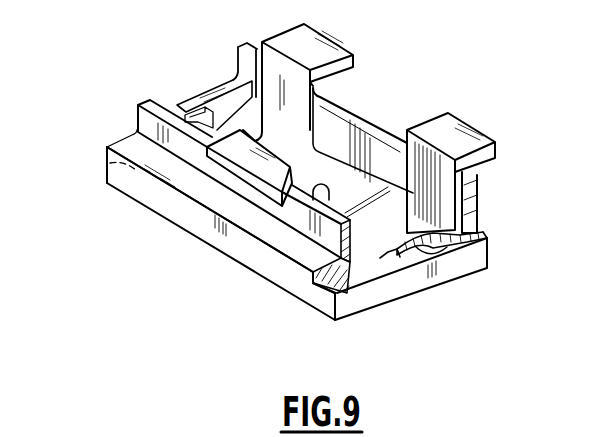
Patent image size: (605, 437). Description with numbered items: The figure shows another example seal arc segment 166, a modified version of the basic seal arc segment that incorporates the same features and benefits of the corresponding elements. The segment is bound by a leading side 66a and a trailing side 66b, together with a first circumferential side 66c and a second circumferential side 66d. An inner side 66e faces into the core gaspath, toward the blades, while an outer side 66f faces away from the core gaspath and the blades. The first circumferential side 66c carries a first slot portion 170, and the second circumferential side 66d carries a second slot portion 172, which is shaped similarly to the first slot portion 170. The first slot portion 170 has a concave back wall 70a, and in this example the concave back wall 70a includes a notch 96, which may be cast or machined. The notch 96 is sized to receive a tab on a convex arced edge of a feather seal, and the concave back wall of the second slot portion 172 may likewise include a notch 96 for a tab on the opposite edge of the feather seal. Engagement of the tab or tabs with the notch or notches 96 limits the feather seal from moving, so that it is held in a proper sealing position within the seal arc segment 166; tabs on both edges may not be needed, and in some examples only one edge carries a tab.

The seal arc segment 166 is at (204, 272).
The leading side 66a is at (304, 283).
The trailing side 66b is at (492, 247).
The first circumferential side 66c is at (360, 310).
The second circumferential side 66d is at (107, 158).
The inner side 66e is at (417, 300).
The outer side 66f is at (353, 197).
The concave back wall 70a is at (480, 235).
The notch 96 is at (389, 255).
The first slot portion 170 is at (443, 253).
The second slot portion 172 is at (132, 166).